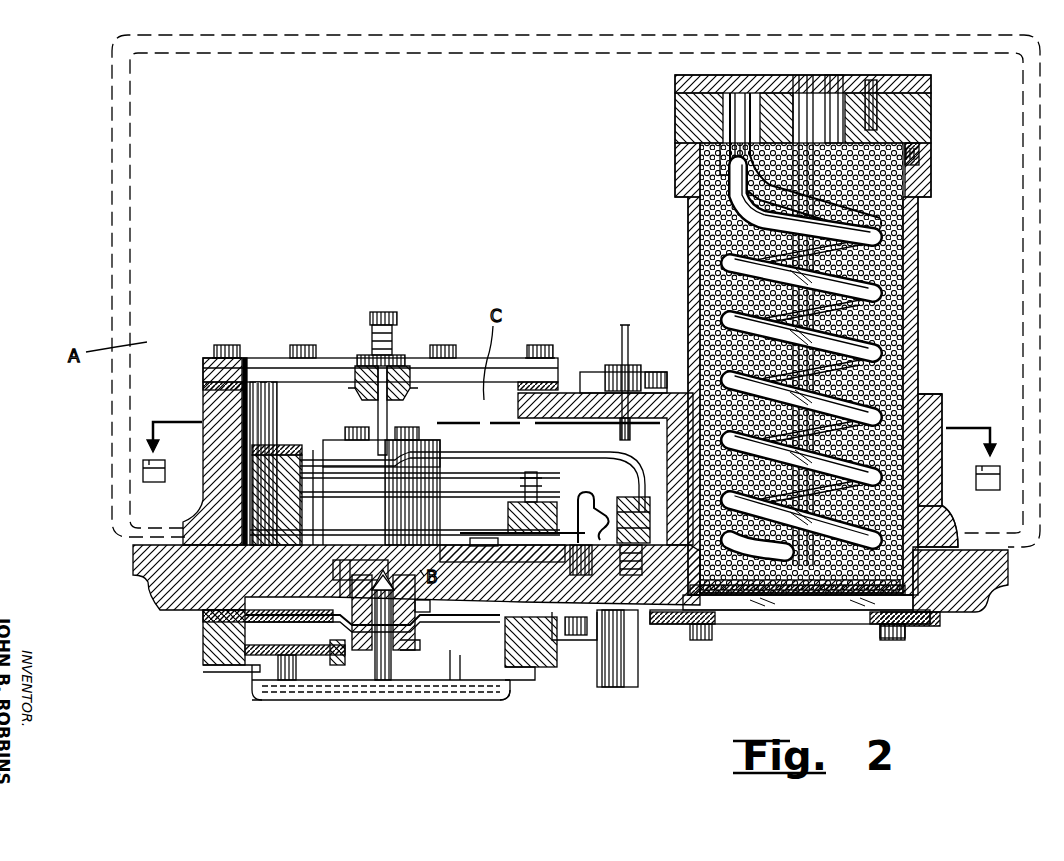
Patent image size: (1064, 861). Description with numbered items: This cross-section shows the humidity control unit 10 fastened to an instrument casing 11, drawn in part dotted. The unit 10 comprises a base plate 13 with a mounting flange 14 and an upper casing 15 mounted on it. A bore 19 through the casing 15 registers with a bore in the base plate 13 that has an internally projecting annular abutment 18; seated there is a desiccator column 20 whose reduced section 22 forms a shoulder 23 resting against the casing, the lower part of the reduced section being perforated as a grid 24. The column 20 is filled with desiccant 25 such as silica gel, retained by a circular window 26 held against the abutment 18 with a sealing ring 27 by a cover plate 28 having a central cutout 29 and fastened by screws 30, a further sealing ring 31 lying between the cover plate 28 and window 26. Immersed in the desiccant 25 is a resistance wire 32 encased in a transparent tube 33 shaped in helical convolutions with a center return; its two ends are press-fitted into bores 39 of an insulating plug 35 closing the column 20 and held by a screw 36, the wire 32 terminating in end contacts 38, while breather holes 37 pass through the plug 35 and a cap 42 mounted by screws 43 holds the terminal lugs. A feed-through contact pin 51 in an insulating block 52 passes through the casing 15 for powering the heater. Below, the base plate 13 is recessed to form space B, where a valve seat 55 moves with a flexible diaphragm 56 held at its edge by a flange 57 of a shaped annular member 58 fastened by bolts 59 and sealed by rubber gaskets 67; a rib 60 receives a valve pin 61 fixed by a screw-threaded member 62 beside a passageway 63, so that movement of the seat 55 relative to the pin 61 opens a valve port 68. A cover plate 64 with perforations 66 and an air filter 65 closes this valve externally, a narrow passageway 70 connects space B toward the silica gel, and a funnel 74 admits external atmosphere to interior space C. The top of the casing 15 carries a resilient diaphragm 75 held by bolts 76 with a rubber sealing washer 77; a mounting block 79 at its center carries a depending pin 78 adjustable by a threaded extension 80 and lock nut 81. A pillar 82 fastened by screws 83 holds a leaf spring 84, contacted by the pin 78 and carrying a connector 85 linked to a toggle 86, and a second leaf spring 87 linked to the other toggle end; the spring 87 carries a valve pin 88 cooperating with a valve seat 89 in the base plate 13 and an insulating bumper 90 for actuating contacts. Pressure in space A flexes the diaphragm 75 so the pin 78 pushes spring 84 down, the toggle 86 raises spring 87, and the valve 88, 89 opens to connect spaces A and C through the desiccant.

The humidity control unit 10 is at (265, 297).
The instrument casing 11 is at (1028, 121).
The base plate 13 is at (133, 557).
The flange 14 is at (988, 566).
The upper casing 15 is at (220, 443).
The annular abutment 18 is at (880, 600).
The bore 19 is at (905, 425).
The desiccator column 20 is at (927, 225).
The reduced section 22 is at (916, 398).
The shoulder 23 is at (688, 390).
The grid 24 is at (940, 508).
The desiccant 25 is at (690, 238).
The circular window 26 is at (725, 602).
The sealing ring 27 is at (895, 600).
The cover plate 28 is at (888, 640).
The central cutout portion 29 is at (795, 612).
The screws 30 is at (704, 642).
The sealing ring 31 is at (935, 614).
The resistance wire 32 is at (886, 283).
The transparent tube 33 is at (880, 314).
The plug 35 is at (931, 120).
The screw 36 is at (925, 155).
The breather holes 37 is at (770, 82).
The end contacts 38 is at (722, 150).
The bores 39 is at (800, 112).
The cap 42 is at (931, 86).
The screws 43 is at (868, 75).
The feed-through contact pin 51 is at (614, 323).
The insulating block 52 is at (608, 368).
The valve seat 55 is at (405, 640).
The flexible diaphragm member 56 is at (320, 625).
The flange 57 is at (205, 665).
The shaped annular member 58 is at (504, 696).
The bolts 59 is at (535, 680).
The rib 60 is at (458, 682).
The valve pin 61 is at (385, 680).
The screw-threaded member 62 is at (400, 667).
The passageway 63 is at (342, 658).
The cover plate 64 is at (256, 693).
The air filter 65 is at (286, 685).
The perforations 66 is at (312, 700).
The rubber gaskets 67 is at (210, 617).
The valve port 68 is at (337, 572).
The narrow passageway 70 is at (570, 630).
The funnel 74 is at (612, 690).
The resilient diaphragm 75 is at (268, 358).
The bolts 76 is at (222, 345).
The rubber sealing washer 77 is at (210, 387).
The depending pin 78 is at (372, 451).
The mounting block 79 is at (412, 398).
The threaded extension 80 is at (370, 330).
The lock nut 81 is at (397, 355).
The pillar 82 is at (268, 487).
The screws 83 is at (305, 405).
The leaf spring 84 is at (568, 455).
The connector 85 is at (632, 505).
The toggle 86 is at (600, 500).
The second leaf spring 87 is at (262, 530).
The valve pin 88 is at (520, 552).
The valve seat 89 is at (520, 570).
The insulating bumper 90 is at (576, 560).